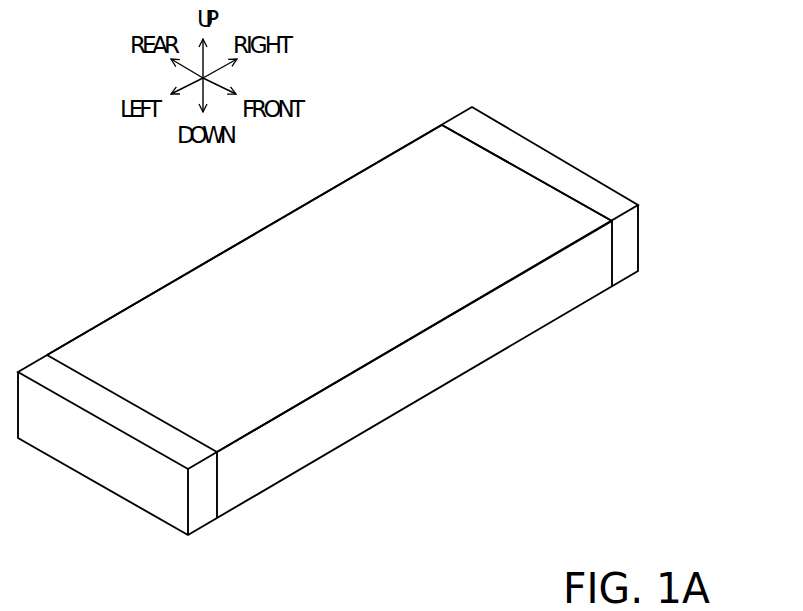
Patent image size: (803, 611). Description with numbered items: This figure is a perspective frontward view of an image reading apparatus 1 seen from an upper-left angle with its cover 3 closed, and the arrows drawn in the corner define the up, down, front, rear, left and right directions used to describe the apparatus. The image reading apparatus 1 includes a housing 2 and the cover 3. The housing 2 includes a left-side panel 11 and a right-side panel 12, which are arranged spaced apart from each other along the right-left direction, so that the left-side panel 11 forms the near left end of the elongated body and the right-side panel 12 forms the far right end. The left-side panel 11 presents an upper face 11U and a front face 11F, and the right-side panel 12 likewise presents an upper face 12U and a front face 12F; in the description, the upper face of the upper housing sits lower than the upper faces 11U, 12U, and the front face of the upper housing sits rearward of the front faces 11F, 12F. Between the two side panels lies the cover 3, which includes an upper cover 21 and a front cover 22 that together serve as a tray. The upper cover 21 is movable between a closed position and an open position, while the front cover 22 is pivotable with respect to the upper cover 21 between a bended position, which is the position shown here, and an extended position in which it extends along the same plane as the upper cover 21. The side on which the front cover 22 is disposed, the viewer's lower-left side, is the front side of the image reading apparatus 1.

The image reading apparatus 1 is at (370, 597).
The housing 2 is at (547, 347).
The cover 3 is at (213, 250).
The left-side panel 11 is at (135, 495).
The upper face of the left-side panel 11U is at (43, 360).
The front face of the left-side panel 11F is at (200, 510).
The right-side panel 12 is at (612, 187).
The upper face of the right-side panel 12U is at (565, 173).
The front face of the right-side panel 12F is at (637, 237).
The upper cover 21 is at (487, 147).
The front cover 22 is at (467, 350).